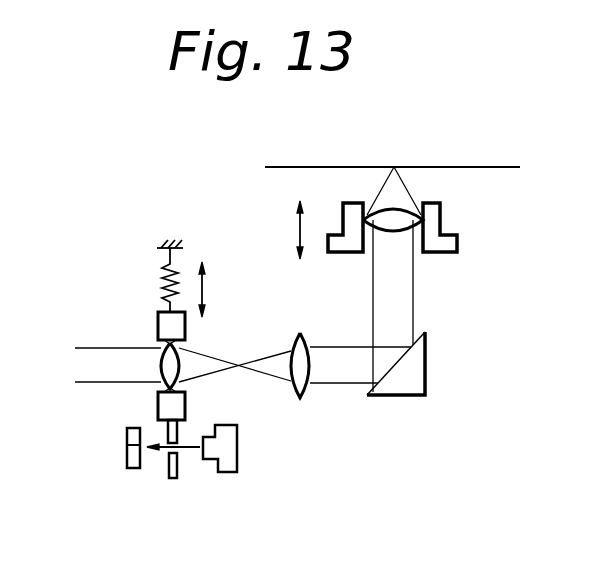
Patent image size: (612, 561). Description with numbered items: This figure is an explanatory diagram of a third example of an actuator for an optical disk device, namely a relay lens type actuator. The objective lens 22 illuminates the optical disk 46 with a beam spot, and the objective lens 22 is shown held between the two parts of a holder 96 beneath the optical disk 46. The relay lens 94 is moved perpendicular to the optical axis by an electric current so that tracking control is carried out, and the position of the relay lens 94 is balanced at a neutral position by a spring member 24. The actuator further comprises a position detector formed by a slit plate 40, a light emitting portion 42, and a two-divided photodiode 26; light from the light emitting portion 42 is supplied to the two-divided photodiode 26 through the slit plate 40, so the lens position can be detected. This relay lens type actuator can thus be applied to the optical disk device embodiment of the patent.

The optical disk 46 is at (266, 168).
The objective lens 22 is at (393, 222).
The lens holder 96 is at (458, 241).
The spring member 24 is at (160, 280).
The relay lens 94 is at (164, 365).
The two-divided photodiode 26 is at (132, 468).
The slit plate 40 is at (172, 478).
The light emitting portion 42 is at (225, 472).